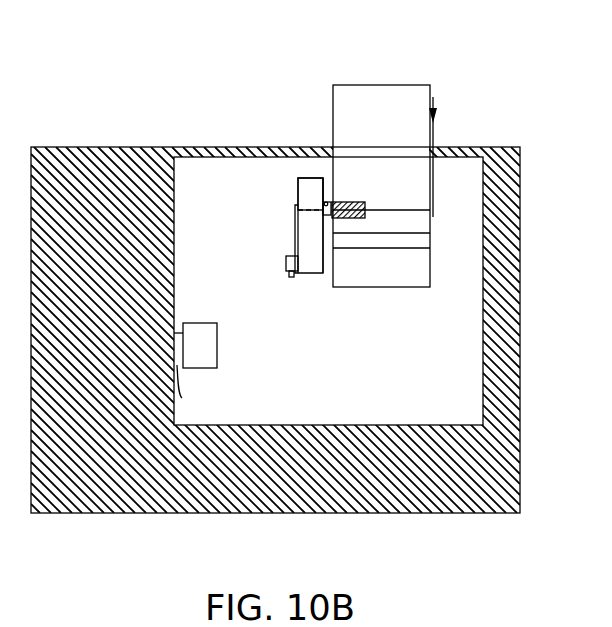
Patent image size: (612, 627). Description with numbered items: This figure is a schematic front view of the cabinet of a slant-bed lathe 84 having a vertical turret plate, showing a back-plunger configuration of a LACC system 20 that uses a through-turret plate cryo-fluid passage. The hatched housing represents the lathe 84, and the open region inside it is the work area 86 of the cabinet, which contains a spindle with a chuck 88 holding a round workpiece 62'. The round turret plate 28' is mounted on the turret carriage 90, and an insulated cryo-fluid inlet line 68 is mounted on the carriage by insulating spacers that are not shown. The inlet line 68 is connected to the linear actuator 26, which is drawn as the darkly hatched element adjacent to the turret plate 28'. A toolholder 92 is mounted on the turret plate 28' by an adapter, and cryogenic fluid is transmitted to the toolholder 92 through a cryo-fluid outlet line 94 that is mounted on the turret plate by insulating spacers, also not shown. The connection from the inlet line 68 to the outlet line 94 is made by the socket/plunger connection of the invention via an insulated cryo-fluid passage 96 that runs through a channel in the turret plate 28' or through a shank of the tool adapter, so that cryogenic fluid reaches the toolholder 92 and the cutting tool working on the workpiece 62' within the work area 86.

The LACC system 20 is at (188, 96).
The slant-bed lathe 84 is at (432, 505).
The work area 86 is at (422, 376).
The turret carriage 90 is at (361, 108).
The insulated cryo-fluid inlet line 68 is at (433, 97).
The linear actuator 26 is at (359, 202).
The cryo-fluid outlet line 94 is at (295, 233).
The insulated cryo-fluid passage 96 is at (312, 207).
The vertical turret plate 28' is at (276, 258).
The toolholder 92 is at (287, 266).
The round workpiece 62' is at (225, 344).
The chuck 88 is at (182, 398).